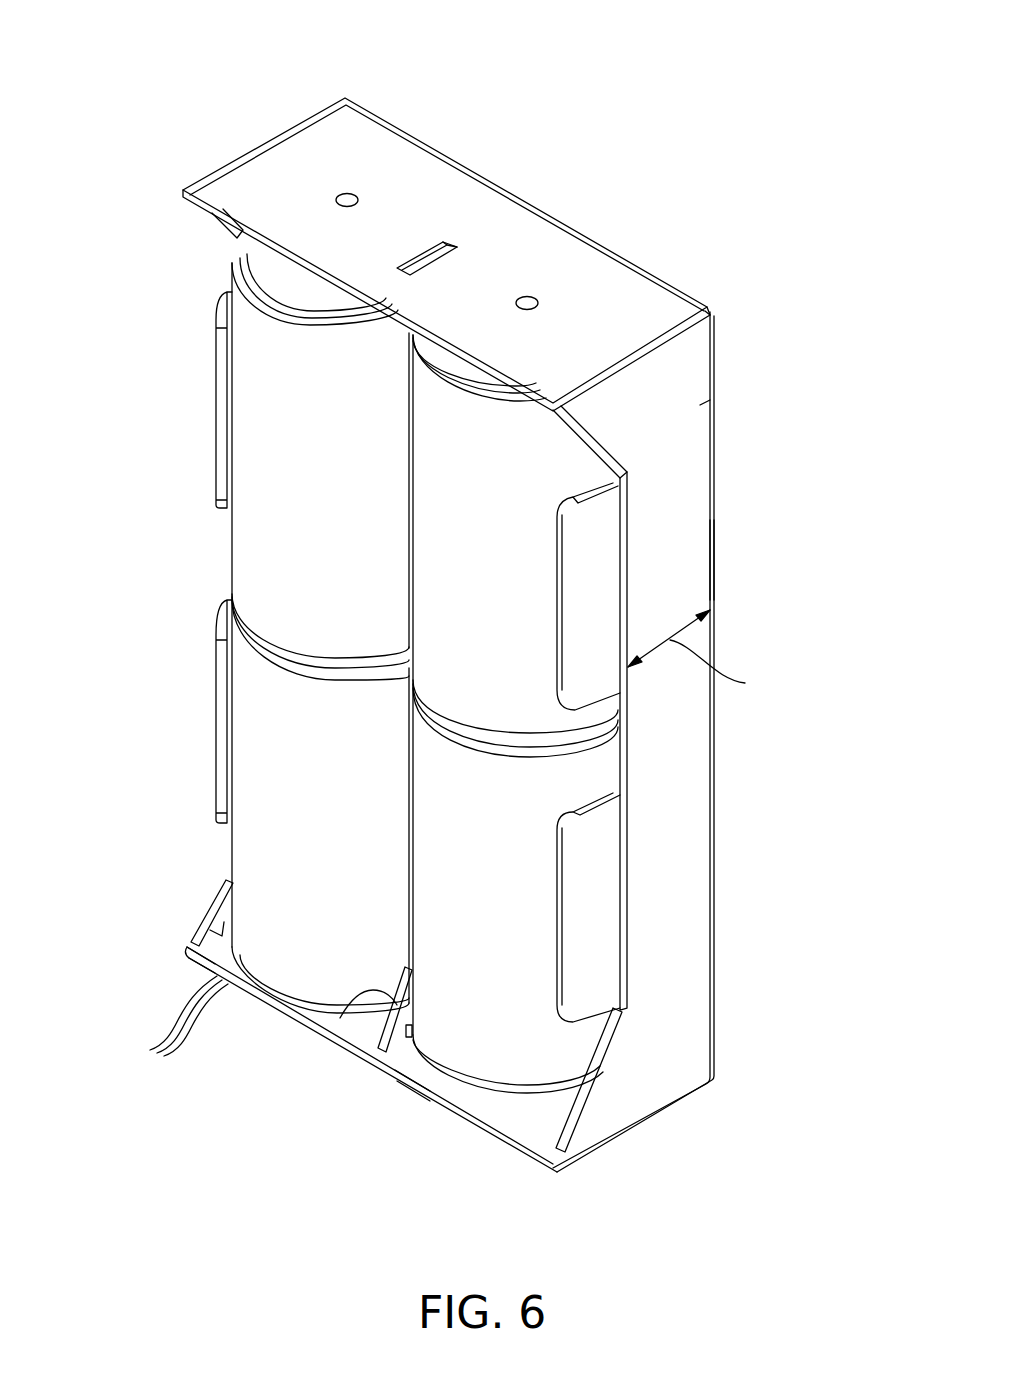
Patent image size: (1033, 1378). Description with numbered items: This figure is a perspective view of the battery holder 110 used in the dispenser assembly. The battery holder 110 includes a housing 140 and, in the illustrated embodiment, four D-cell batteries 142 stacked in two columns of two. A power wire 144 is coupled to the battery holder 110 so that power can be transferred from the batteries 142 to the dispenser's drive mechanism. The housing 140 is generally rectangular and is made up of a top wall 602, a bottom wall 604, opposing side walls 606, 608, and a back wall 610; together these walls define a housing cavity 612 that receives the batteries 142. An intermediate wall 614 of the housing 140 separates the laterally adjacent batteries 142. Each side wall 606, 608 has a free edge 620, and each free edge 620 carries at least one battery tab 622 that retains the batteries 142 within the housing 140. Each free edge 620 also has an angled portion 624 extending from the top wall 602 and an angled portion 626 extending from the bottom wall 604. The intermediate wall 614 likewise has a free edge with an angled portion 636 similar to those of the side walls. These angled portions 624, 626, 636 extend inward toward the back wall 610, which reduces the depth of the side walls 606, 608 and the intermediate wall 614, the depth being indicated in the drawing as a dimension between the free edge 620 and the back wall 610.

The battery holder 110 is at (690, 78).
The housing 140 is at (697, 410).
The batteries 142 is at (316, 479).
The power wire 144 is at (172, 1000).
The top wall 602 is at (460, 190).
The bottom wall 604 is at (545, 1163).
The side wall 606 is at (700, 795).
The side wall 608 is at (183, 947).
The back wall 610 is at (713, 560).
The housing cavity 612 is at (412, 1070).
The intermediate wall 614 is at (378, 1035).
The free edge 620 is at (215, 395).
The battery tab 622 is at (615, 611).
The angled portion 624 is at (222, 225).
The angled portion 626 is at (228, 880).
The angled portion 636 is at (340, 1018).